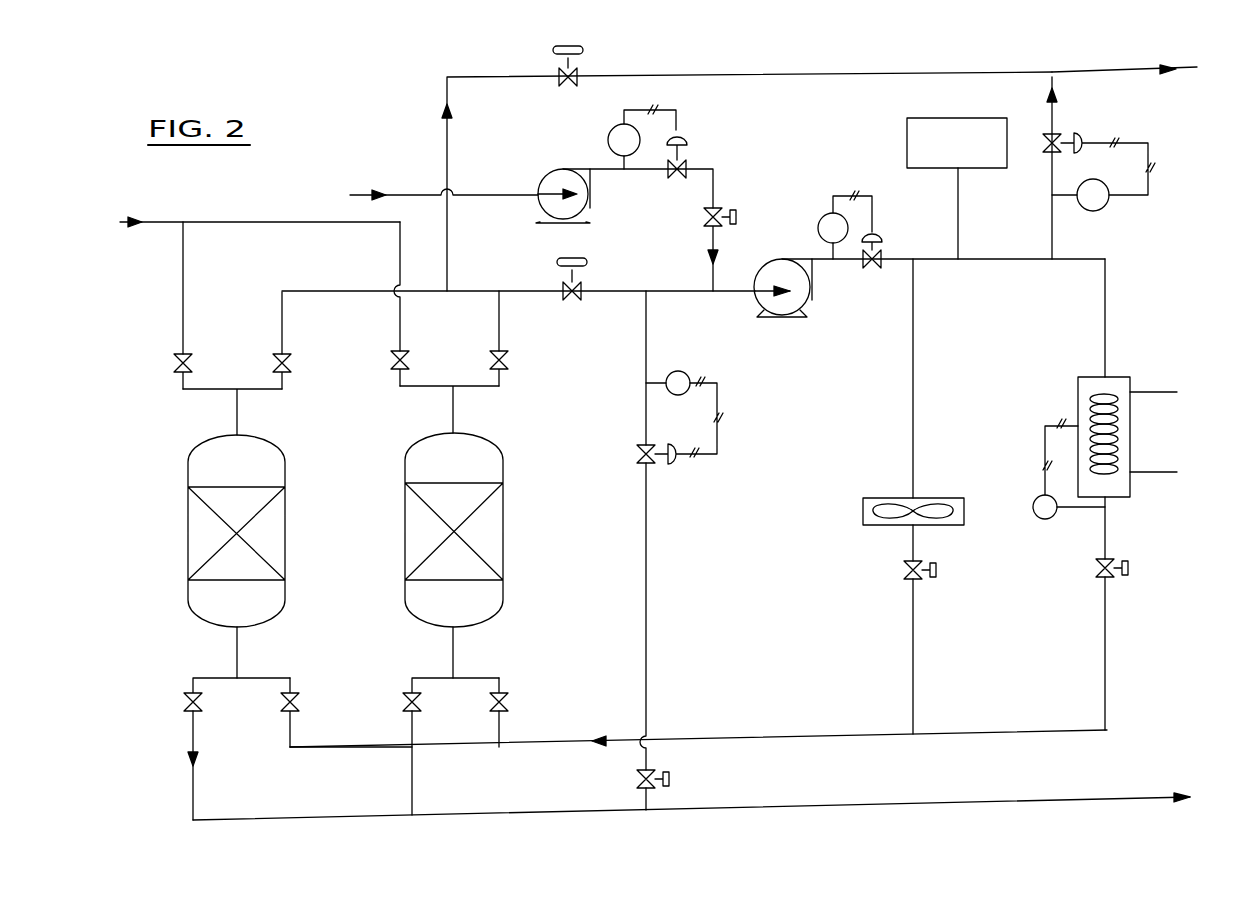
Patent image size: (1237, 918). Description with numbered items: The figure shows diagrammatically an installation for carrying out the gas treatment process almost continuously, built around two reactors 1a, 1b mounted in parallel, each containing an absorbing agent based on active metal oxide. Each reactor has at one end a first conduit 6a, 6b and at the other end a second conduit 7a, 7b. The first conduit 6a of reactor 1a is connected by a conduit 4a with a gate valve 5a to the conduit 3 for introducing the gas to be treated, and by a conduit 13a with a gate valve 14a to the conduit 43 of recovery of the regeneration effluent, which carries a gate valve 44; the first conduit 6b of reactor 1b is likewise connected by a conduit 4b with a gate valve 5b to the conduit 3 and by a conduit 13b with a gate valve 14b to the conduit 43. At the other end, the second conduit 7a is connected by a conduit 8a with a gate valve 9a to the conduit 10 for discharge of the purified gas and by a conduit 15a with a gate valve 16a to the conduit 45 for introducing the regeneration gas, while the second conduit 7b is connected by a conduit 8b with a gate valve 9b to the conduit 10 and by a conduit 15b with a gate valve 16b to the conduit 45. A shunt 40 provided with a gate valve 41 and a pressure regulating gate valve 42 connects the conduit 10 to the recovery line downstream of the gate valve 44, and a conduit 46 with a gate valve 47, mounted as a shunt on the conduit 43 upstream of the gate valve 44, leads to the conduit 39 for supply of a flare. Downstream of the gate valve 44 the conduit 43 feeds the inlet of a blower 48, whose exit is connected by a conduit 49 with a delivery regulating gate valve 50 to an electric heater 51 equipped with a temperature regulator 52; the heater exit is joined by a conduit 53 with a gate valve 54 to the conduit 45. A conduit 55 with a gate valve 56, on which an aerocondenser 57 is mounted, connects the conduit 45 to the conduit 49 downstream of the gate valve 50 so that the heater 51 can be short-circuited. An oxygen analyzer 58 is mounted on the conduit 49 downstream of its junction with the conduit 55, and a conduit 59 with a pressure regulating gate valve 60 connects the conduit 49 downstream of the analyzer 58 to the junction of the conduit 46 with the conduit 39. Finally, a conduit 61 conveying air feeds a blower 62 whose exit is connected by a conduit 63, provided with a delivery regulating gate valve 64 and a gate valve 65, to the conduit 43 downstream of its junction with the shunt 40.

The reactor 1a is at (188, 528).
The reactor 1b is at (508, 528).
The conduit for introducing the gas to be treated 3 is at (114, 222).
The conduit 4a is at (182, 289).
The conduit 4b is at (402, 318).
The gate valve 5a is at (176, 366).
The gate valve 5b is at (400, 375).
The first conduit 6a is at (232, 419).
The first conduit 6b is at (460, 409).
The second conduit 7a is at (234, 652).
The second conduit 7b is at (460, 642).
The conduit 8a is at (192, 784).
The conduit 8b is at (412, 783).
The gate valve 9a is at (188, 703).
The gate valve 9b is at (410, 704).
The conduit for discharge of the purified gas 10 is at (580, 816).
The conduit 13a is at (286, 318).
The conduit 13b is at (508, 318).
The gate valve 14a is at (288, 364).
The gate valve 14b is at (508, 370).
The conduit 15a is at (289, 744).
The conduit 15b is at (508, 720).
The gate valve 16a is at (294, 693).
The gate valve 16b is at (508, 695).
The conduit for supply of a flare 39 is at (1110, 68).
The shunt 40 is at (648, 581).
The gate valve 41 is at (670, 778).
The gate valve for regulation of pressure 42 is at (652, 468).
The conduit of recovery of the regeneration effluent 43 is at (300, 291).
The gate valve 44 is at (580, 262).
The conduit for introducing a regeneration gas 45 is at (722, 739).
The conduit 46 is at (454, 74).
The gate valve 47 is at (578, 56).
The blower 48 is at (810, 292).
The conduit 49 is at (990, 259).
The gate valve for delivery regulation 50 is at (874, 230).
The electric heater 51 is at (1117, 373).
The temperature regulator 52 is at (1042, 522).
The conduit 53 is at (1110, 679).
The gate valve 54 is at (1128, 566).
The conduit 55 is at (914, 657).
The gate valve 56 is at (904, 576).
The aerocondenser 57 is at (942, 496).
The oxygen analyzer 58 is at (988, 168).
The conduit 59 is at (1052, 236).
The gate valve for pressure regulation 60 is at (1078, 135).
The conduit for conveying air 61 is at (364, 195).
The blower 62 is at (552, 174).
The conduit 63 is at (716, 173).
The gate valve for regulation of the delivery 64 is at (680, 140).
The gate valve 65 is at (738, 218).